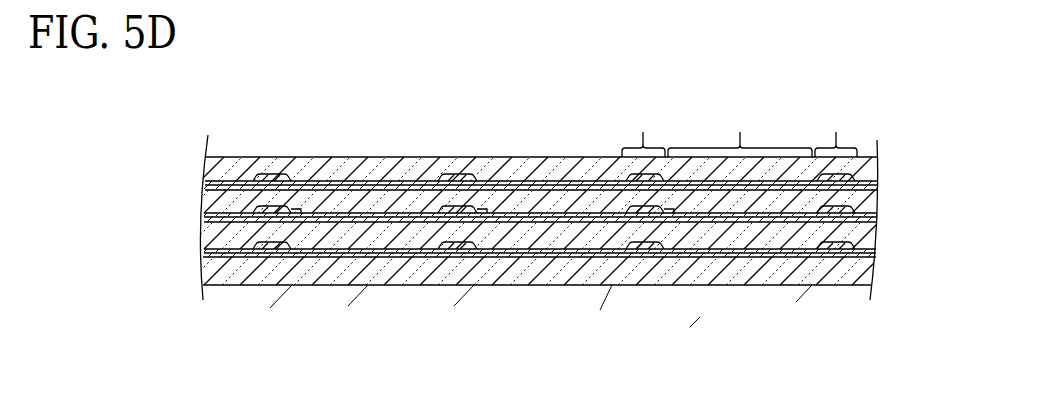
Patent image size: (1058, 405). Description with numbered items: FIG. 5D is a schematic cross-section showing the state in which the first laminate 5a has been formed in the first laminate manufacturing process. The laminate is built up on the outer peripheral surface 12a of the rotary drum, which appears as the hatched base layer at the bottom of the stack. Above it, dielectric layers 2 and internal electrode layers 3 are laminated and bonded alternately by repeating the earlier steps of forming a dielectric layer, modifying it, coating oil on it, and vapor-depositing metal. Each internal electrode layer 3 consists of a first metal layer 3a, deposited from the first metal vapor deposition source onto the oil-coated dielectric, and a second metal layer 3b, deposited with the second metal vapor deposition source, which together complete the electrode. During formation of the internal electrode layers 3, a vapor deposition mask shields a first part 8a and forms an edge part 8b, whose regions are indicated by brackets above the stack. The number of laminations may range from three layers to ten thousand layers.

The dielectric layer 2 is at (243, 203).
The internal electrode layer 3 is at (455, 93).
The first metal layer 3a is at (317, 213).
The second metal layer 3b is at (272, 206).
The first laminate 5a is at (878, 128).
The first part 8a is at (740, 124).
The edge part 8b is at (741, 124).
The outer peripheral surface 12a is at (662, 285).